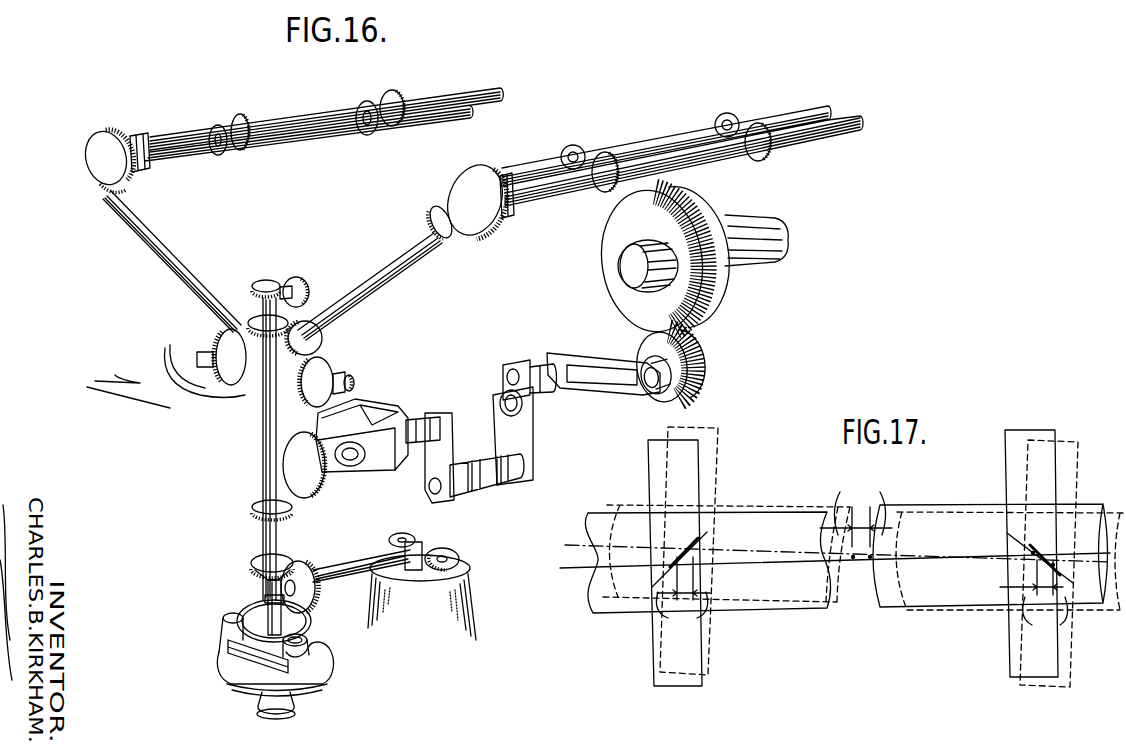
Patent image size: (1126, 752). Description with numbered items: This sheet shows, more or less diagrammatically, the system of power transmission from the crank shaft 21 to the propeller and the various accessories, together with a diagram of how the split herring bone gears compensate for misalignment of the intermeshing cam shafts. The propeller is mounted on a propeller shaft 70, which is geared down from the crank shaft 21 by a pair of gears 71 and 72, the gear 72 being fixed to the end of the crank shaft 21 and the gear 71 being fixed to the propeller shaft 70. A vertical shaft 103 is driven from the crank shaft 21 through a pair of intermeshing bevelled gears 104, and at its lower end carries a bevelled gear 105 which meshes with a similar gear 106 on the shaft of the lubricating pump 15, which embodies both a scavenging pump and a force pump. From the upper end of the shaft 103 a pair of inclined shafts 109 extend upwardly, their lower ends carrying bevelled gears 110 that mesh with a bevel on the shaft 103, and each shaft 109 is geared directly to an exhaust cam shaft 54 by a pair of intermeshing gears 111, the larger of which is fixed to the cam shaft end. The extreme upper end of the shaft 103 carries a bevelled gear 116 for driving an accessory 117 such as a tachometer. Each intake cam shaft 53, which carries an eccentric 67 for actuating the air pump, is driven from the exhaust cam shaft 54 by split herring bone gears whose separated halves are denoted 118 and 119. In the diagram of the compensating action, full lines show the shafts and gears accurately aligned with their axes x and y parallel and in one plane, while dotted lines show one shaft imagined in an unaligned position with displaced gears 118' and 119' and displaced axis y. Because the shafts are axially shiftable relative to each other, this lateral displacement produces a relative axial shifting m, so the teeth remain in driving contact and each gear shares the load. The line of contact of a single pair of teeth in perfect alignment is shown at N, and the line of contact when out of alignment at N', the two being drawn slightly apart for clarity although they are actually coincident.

In FIG. 16, the lubricating pump 15 is at (435, 610).
In FIG. 16, the crank shaft 21 is at (527, 442).
In FIG. 16, the intake cam shaft 53 is at (297, 122).
In FIG. 16, the exhaust cam shaft 54 is at (310, 135).
In FIG. 16, the eccentric 67 is at (147, 166).
In FIG. 16, the propeller shaft 70 is at (786, 252).
In FIG. 16, the gear 71 is at (733, 287).
In FIG. 16, the gear 72 is at (712, 367).
In FIG. 16, the vertical shaft 103 is at (268, 402).
In FIG. 16, the intermeshing bevelled gears 104 is at (297, 507).
In FIG. 16, the bevelled gear 105 is at (298, 518).
In FIG. 16, the bevelled gear 106 is at (288, 565).
In FIG. 16, the inclined shafts 109 is at (177, 262).
In FIG. 16, the bevelled gears 110 is at (250, 318).
In FIG. 16, the intermeshing gears 111 is at (100, 194).
In FIG. 16, the bevelled gear 116 is at (265, 278).
In FIG. 16, the accessory 117 is at (300, 277).
In FIG. 16, the herring bone gear half 118 is at (414, 131).
In FIG. 17, the herring bone gear half 118 is at (646, 563).
In FIG. 17, the displaced gear 118' is at (711, 551).
In FIG. 16, the herring bone gear half 119 is at (571, 108).
In FIG. 17, the herring bone gear half 119 is at (1036, 532).
In FIG. 17, the displaced gear 119' is at (1063, 552).
In FIG. 17, the relative axial shifting m is at (861, 556).
In FIG. 17, the line of contact N is at (844, 558).
In FIG. 17, the line of contact N' is at (905, 566).
In FIG. 17, the axis x is at (822, 565).
In FIG. 17, the axis y is at (827, 549).